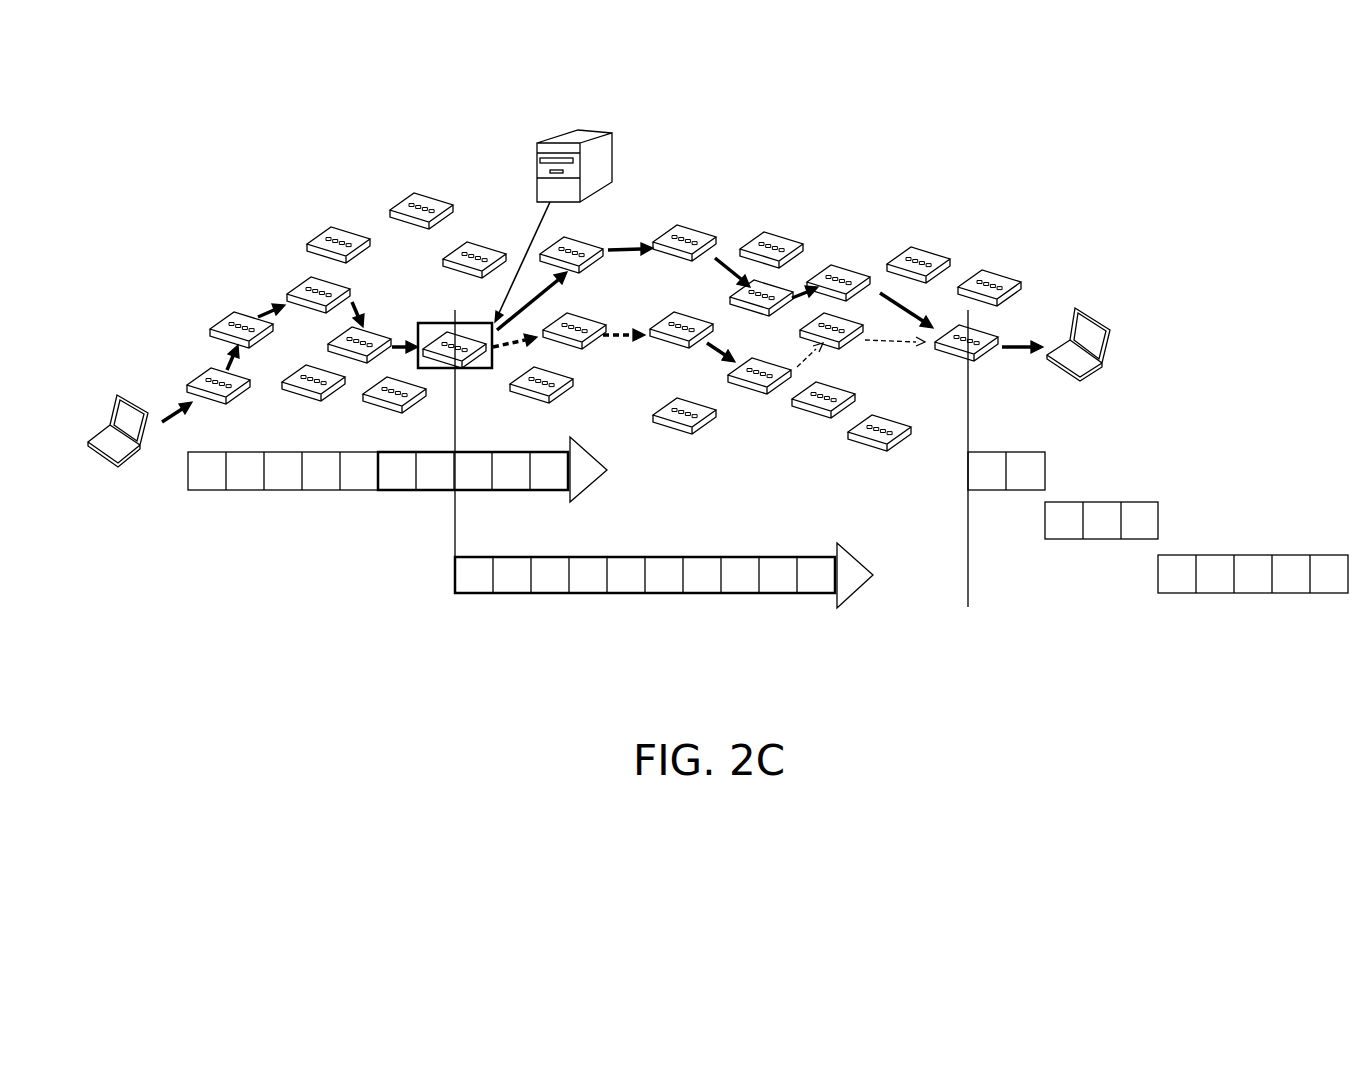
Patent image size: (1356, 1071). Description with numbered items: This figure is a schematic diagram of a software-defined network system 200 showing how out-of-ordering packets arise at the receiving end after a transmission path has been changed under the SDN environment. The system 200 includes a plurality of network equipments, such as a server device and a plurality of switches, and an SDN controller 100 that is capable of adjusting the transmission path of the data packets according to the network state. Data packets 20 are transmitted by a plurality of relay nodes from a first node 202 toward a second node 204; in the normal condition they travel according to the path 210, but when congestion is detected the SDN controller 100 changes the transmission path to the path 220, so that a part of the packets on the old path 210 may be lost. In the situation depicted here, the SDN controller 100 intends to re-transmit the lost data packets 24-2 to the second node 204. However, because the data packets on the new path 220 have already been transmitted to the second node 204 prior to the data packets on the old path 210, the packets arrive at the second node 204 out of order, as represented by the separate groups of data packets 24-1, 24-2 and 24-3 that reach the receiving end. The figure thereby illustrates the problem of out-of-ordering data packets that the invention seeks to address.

The SDN controller 100 is at (595, 128).
The software-defined network system 200 is at (1305, 416).
The first node 202 is at (445, 333).
The second node 204 is at (948, 350).
The path 210 is at (612, 338).
The path 220 is at (622, 252).
The data packets 20 is at (360, 490).
The data packets 24-1 is at (993, 490).
The data packets 24-2 is at (1065, 540).
The data packets 24-3 is at (1253, 593).